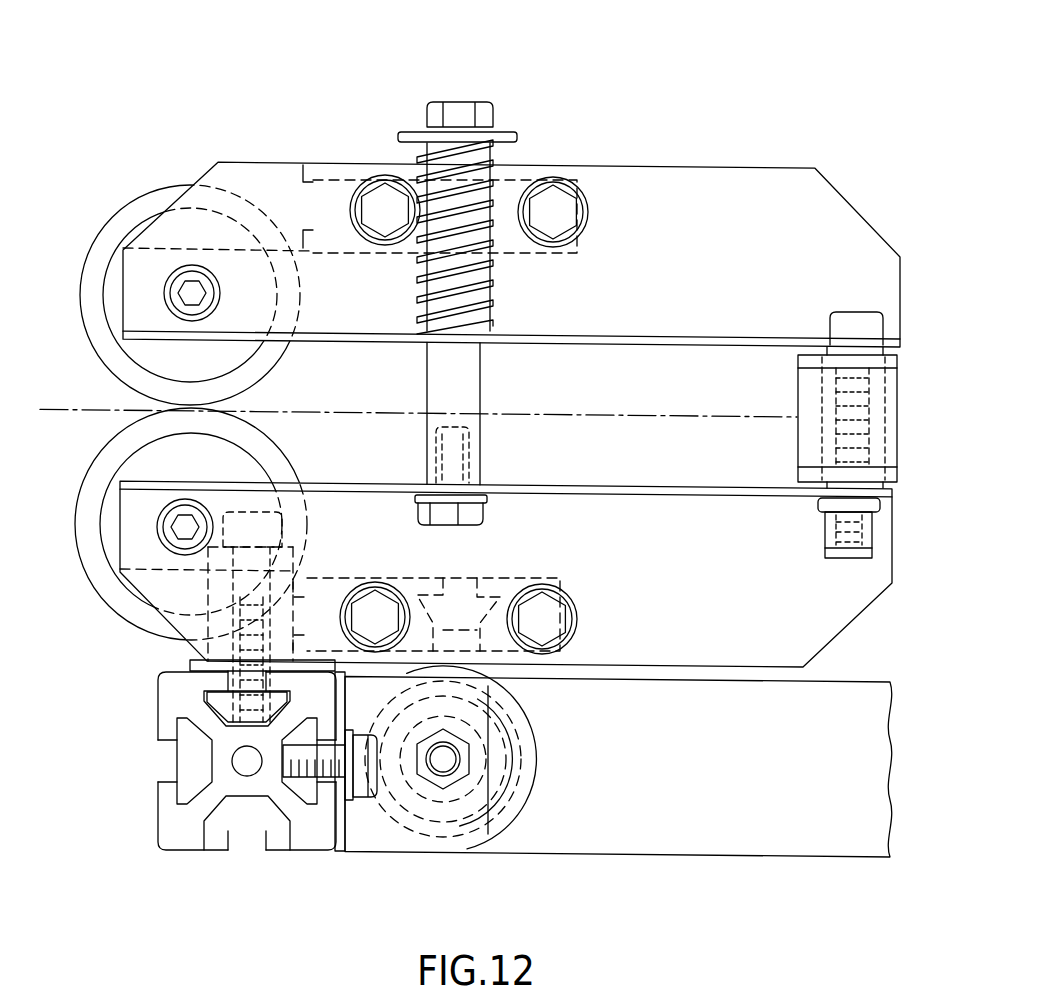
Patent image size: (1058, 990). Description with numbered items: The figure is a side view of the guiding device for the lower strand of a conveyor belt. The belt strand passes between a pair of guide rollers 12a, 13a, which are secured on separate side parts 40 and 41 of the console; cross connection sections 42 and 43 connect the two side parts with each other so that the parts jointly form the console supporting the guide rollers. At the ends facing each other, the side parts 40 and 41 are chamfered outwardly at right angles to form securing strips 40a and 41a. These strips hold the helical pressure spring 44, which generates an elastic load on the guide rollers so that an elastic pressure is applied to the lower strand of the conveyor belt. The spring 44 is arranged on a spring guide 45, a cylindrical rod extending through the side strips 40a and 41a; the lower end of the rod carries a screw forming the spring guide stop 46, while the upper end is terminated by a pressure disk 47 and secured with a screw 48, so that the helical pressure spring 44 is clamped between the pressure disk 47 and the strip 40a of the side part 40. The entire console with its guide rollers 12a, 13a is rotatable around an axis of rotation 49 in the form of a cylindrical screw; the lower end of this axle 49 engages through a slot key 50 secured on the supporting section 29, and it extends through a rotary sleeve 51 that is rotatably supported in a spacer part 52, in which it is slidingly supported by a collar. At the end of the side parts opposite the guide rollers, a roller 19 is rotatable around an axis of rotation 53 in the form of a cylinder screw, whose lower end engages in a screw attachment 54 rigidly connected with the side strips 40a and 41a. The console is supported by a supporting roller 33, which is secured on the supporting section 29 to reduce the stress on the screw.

The guide roller 12a is at (135, 206).
The guide roller 13a is at (83, 578).
The side part 40 is at (753, 167).
The securing strip 40a is at (634, 337).
The side part 41 is at (670, 668).
The securing strip 41a is at (620, 497).
The cross connection section 42 is at (513, 254).
The cross connection section 43 is at (508, 578).
The helical pressure spring 44 is at (497, 163).
The spring guide 45 is at (481, 379).
The spring guide stop 46 is at (457, 524).
The pressure disk 47 is at (505, 131).
The screw 48 is at (433, 108).
The axis of rotation 49 is at (253, 585).
The slot key 50 is at (207, 695).
The rotary sleeve 51 is at (266, 580).
The sliding block 52 is at (207, 590).
The axis of rotation 53 is at (840, 388).
The roller 19 is at (798, 438).
The screw attachment 54 is at (825, 530).
The supporting section 29 is at (158, 818).
The supporting roller 33 is at (535, 773).